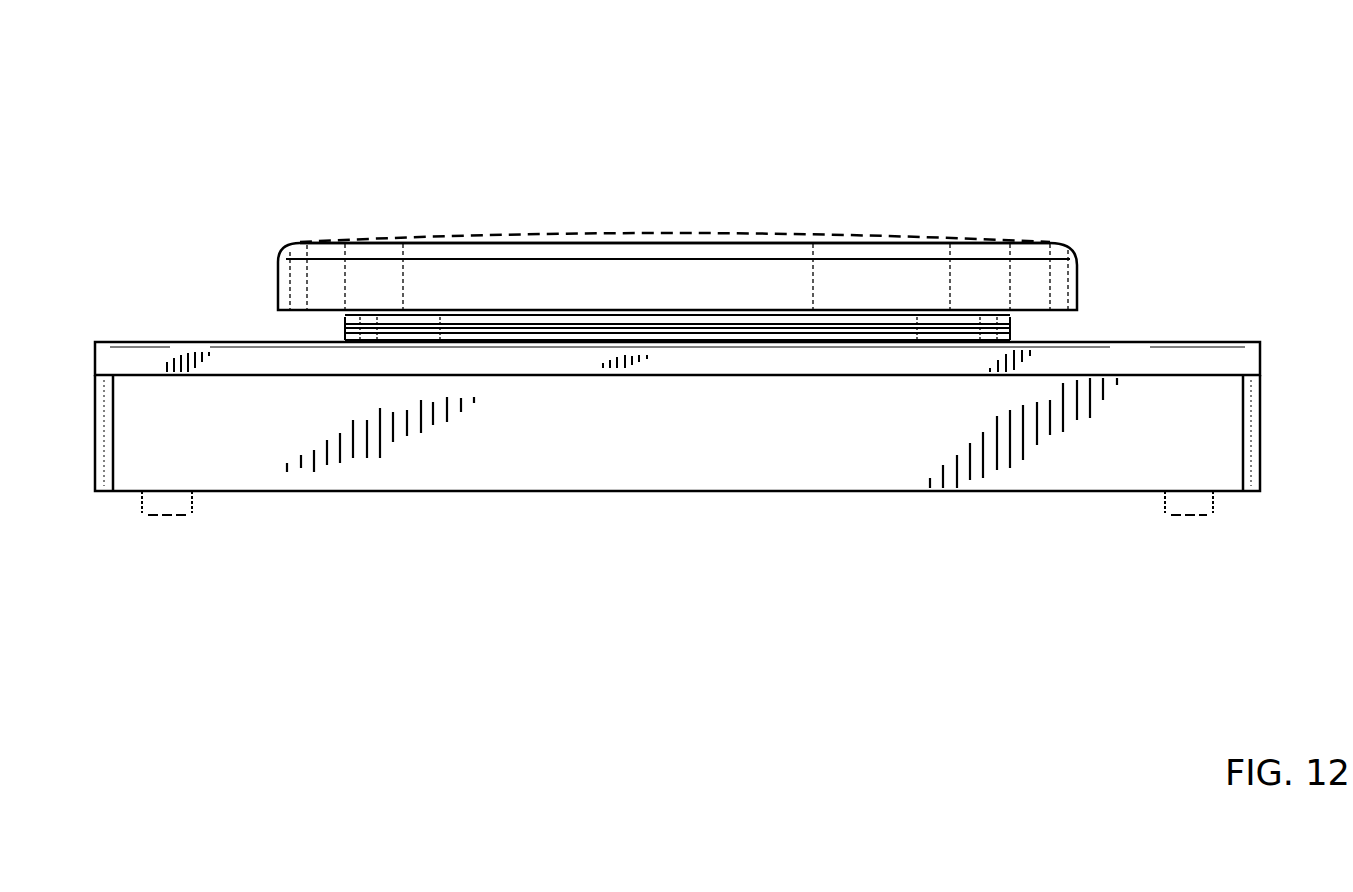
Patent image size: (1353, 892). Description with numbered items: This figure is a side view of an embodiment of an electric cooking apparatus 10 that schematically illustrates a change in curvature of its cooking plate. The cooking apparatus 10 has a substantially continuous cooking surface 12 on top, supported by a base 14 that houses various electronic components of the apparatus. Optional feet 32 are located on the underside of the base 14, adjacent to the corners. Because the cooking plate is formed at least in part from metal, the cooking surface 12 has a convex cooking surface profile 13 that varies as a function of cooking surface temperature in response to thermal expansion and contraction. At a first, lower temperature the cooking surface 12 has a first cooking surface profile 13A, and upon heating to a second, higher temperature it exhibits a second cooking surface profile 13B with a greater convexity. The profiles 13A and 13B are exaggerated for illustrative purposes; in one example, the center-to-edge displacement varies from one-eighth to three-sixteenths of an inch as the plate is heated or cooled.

The cooking apparatus 10 is at (1004, 192).
The cooking surface 12 is at (307, 225).
The cooking surface profile 13 is at (743, 155).
The first cooking surface profile 13A is at (506, 228).
The second cooking surface profile 13B is at (635, 218).
The base 14 is at (110, 363).
The feet 32 is at (155, 518).